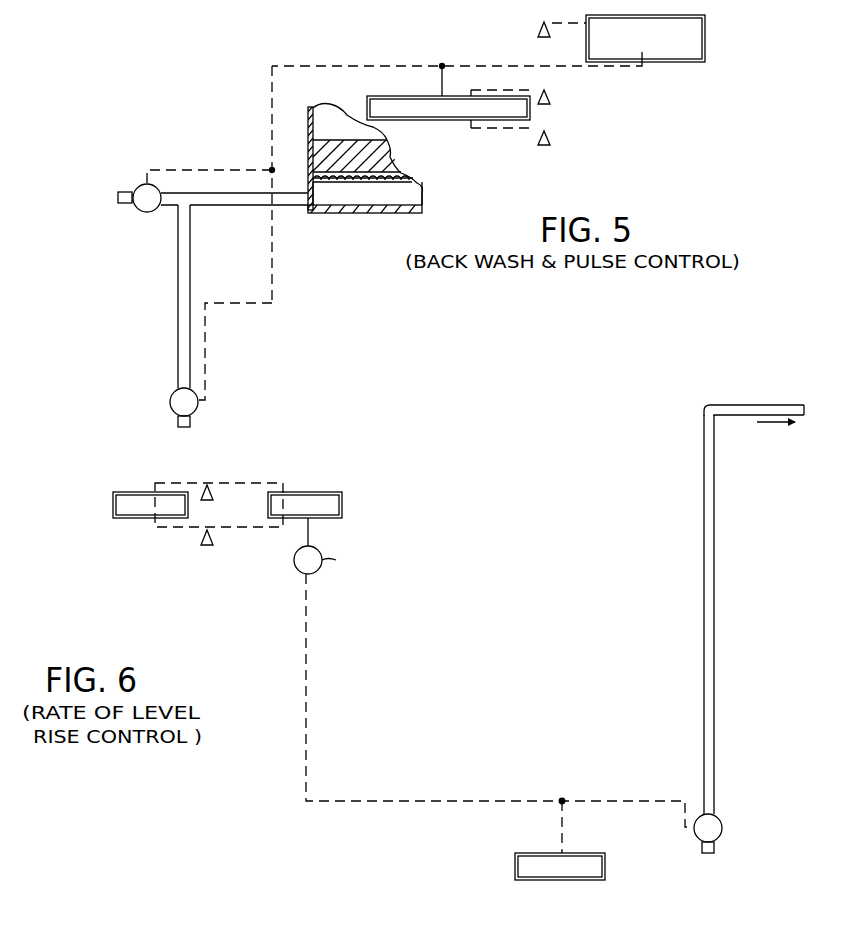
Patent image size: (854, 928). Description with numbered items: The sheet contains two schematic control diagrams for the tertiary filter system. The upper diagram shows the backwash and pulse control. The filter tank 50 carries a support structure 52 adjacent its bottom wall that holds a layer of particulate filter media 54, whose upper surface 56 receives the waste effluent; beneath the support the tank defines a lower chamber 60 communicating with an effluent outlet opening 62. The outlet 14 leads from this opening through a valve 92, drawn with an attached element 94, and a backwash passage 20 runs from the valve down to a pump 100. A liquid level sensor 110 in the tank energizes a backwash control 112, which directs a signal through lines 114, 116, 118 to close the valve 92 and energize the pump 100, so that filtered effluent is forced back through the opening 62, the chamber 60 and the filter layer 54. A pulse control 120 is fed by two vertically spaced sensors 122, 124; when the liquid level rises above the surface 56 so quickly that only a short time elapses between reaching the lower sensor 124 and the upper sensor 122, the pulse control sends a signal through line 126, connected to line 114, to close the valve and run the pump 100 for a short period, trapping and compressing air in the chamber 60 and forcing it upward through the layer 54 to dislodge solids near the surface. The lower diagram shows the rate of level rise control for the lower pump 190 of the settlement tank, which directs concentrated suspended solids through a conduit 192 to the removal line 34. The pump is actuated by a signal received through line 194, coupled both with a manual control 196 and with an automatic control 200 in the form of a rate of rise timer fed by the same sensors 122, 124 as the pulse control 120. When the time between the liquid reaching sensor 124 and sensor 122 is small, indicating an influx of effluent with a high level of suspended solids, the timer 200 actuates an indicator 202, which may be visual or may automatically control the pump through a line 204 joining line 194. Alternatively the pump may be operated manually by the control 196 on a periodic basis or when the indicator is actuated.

In FIG. 5, the outlet 14 is at (236, 190).
In FIG. 5, the backwash passage 20 is at (193, 262).
In FIG. 6, the removal line 34 is at (750, 400).
In FIG. 5, the tank 50 is at (362, 214).
In FIG. 5, the support structure 52 is at (400, 184).
In FIG. 5, the filter layer 54 is at (384, 158).
In FIG. 5, the upper surface 56 is at (338, 140).
In FIG. 5, the lower chamber 60 is at (408, 203).
In FIG. 5, the effluent outlet opening 62 is at (314, 222).
In FIG. 5, the valve 92 is at (145, 212).
In FIG. 5, the valve actuator 94 is at (118, 199).
In FIG. 5, the pump 100 is at (170, 402).
In FIG. 5, the liquid level sensor 110 is at (542, 30).
In FIG. 5, the backwash control 112 is at (705, 48).
In FIG. 5, the line 114 is at (620, 68).
In FIG. 5, the line 116 is at (177, 168).
In FIG. 5, the line 118 is at (272, 293).
In FIG. 5, the pulse control 120 is at (452, 120).
In FIG. 6, the pulse control 120 is at (125, 516).
In FIG. 5, the sensor 122 is at (552, 100).
In FIG. 6, the sensor 122 is at (213, 492).
In FIG. 5, the sensor 124 is at (552, 140).
In FIG. 6, the sensor 124 is at (208, 548).
In FIG. 5, the line 126 is at (442, 86).
In FIG. 6, the lower pump 190 is at (722, 826).
In FIG. 6, the conduit 192 is at (712, 625).
In FIG. 6, the line 194 is at (590, 801).
In FIG. 6, the manual control 196 is at (605, 865).
In FIG. 6, the automatic control 200 is at (342, 506).
In FIG. 6, the indicator 202 is at (300, 566).
In FIG. 6, the indicator line 204 is at (306, 706).